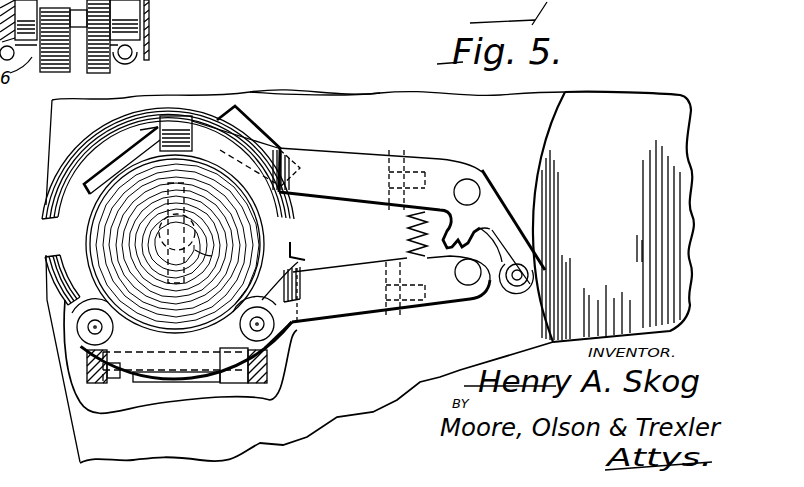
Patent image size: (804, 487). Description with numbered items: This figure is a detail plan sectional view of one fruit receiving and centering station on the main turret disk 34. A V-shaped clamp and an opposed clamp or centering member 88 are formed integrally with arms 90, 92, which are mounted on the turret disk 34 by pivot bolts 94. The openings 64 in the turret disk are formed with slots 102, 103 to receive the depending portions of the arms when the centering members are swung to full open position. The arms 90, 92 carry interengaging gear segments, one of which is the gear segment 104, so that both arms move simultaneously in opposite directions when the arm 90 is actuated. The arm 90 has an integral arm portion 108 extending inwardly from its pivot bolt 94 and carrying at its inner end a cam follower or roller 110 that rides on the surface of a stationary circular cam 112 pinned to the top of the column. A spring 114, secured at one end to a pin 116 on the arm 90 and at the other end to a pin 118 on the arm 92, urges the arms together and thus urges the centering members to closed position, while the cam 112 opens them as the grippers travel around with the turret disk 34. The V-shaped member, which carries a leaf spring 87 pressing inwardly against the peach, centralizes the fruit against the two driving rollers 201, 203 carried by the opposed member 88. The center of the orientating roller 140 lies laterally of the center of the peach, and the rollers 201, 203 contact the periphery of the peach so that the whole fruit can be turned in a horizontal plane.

The main turret disk 34 is at (343, 92).
The openings 64 is at (77, 202).
The leaf spring 87 is at (176, 128).
The opposed clamp or centering member 88 is at (165, 366).
The arm 90 is at (432, 170).
The arm 92 is at (437, 300).
The pivot bolts 94 is at (478, 195).
The slot 102 is at (245, 125).
The slot 103 is at (303, 375).
The interengaging teeth or gear segment 104 is at (487, 230).
The integral arm portion 108 is at (508, 235).
The cam follower or roller 110 is at (532, 292).
The circular cam 112 is at (552, 124).
The spring 114 is at (407, 223).
The pin 116 is at (392, 160).
The pin 118 is at (407, 316).
The orientating roller 140 is at (168, 197).
The driving roller 201 is at (77, 323).
The driving roller 203 is at (308, 249).